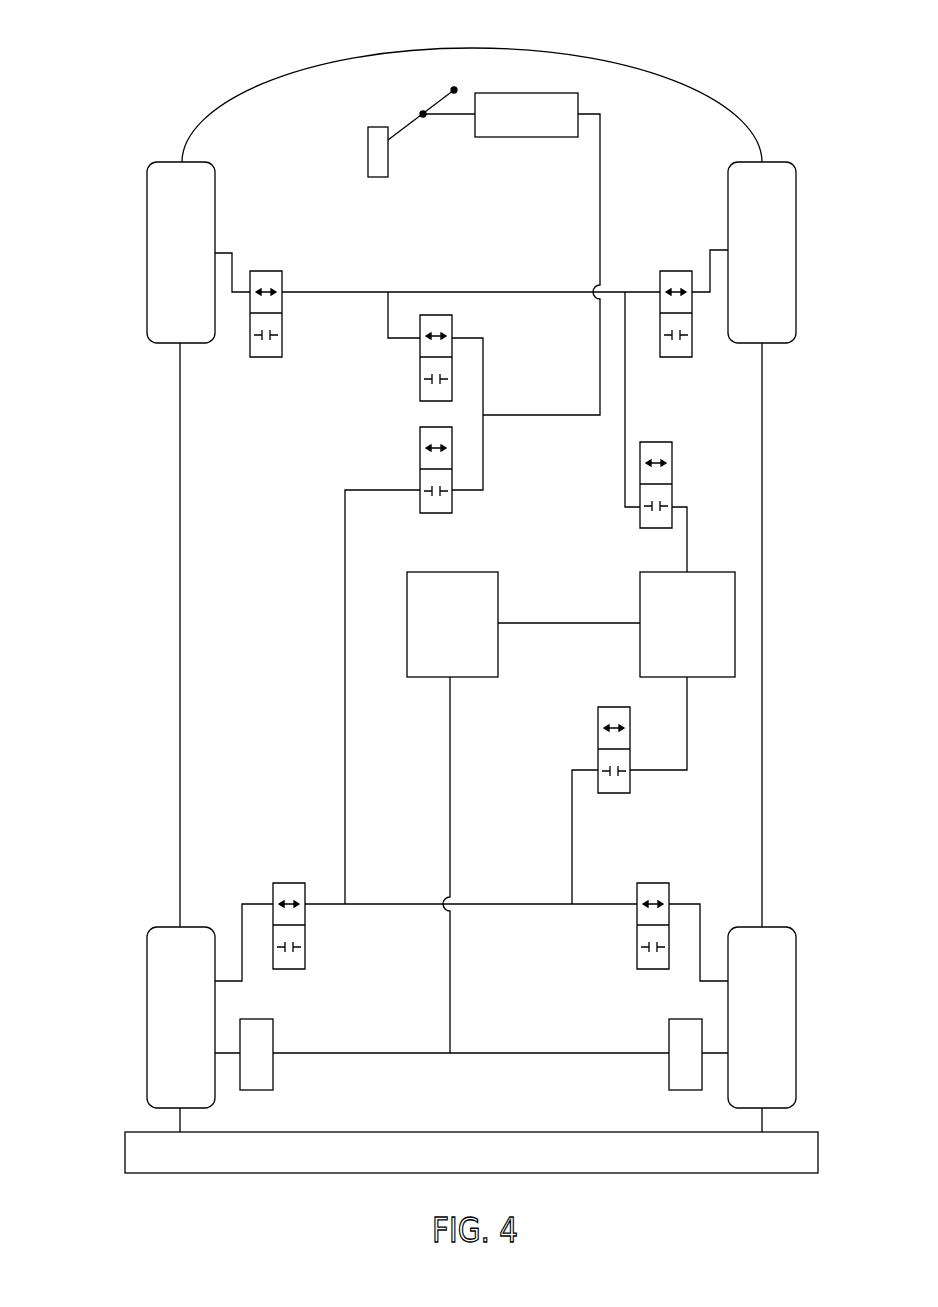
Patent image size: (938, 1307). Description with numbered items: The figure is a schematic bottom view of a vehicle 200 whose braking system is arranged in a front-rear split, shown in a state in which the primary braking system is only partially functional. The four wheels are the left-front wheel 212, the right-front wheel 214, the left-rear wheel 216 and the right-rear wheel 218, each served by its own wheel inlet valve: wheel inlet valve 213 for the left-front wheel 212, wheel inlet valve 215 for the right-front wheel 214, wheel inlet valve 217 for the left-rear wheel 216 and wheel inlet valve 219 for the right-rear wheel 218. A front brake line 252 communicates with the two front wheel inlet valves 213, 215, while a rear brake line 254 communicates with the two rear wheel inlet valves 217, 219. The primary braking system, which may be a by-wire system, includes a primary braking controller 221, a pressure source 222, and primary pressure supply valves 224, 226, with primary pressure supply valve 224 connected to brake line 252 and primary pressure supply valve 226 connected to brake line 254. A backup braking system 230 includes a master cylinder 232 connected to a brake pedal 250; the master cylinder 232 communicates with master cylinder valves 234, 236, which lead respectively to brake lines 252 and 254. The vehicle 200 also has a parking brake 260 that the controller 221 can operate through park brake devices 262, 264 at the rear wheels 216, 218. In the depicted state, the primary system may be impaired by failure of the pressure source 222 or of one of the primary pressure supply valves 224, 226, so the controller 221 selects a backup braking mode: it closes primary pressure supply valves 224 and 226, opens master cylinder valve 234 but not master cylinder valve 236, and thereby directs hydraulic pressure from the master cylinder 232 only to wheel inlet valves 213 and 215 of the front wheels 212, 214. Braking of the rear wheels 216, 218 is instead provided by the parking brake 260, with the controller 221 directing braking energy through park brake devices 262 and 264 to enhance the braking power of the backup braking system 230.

The vehicle 200 is at (135, 72).
The left-front wheel 212 is at (147, 218).
The right-front wheel 214 is at (797, 216).
The left-rear wheel 216 is at (147, 1013).
The right-rear wheel 218 is at (797, 1003).
The wheel inlet valve 213 is at (265, 271).
The wheel inlet valve 215 is at (678, 271).
The wheel inlet valve 217 is at (288, 883).
The wheel inlet valve 219 is at (655, 883).
The primary braking controller 221 is at (470, 636).
The pressure source 222 is at (705, 636).
The primary pressure supply valve 224 is at (672, 450).
The primary pressure supply valve 226 is at (598, 720).
The backup braking system 230 is at (385, 112).
The master cylinder 232 is at (544, 126).
The master cylinder valve 234 is at (420, 395).
The master cylinder valve 236 is at (420, 445).
The brake pedal 250 is at (360, 149).
The brake line 252 is at (343, 292).
The brake line 254 is at (410, 906).
The parking brake 260 is at (481, 1068).
The park brake device 262 is at (265, 1019).
The park brake device 264 is at (685, 1019).